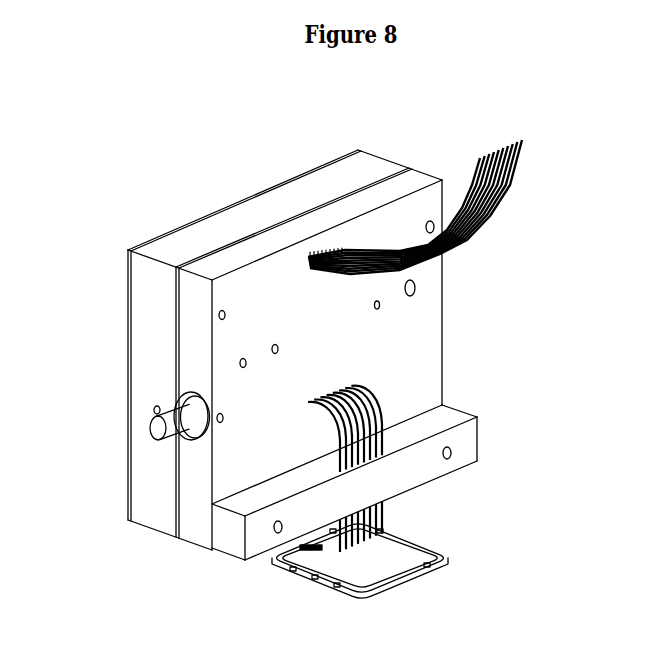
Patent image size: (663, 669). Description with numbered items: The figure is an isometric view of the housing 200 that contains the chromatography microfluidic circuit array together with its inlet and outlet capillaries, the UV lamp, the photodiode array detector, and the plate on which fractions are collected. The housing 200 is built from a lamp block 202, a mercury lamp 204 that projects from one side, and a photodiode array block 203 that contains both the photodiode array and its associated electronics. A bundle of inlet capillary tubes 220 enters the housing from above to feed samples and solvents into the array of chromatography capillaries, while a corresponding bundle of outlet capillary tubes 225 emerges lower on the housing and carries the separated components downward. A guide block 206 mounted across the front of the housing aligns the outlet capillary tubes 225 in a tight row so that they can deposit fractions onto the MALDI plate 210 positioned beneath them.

The housing 200 is at (289, 345).
The lamp block 202 is at (436, 312).
The photodiode array block 203 is at (205, 238).
The mercury lamp 204 is at (160, 430).
The guide block 206 is at (465, 442).
The MALDI plate 210 is at (405, 553).
The inlet capillary tubes 220 is at (482, 160).
The outlet capillary tubes 225 is at (383, 420).